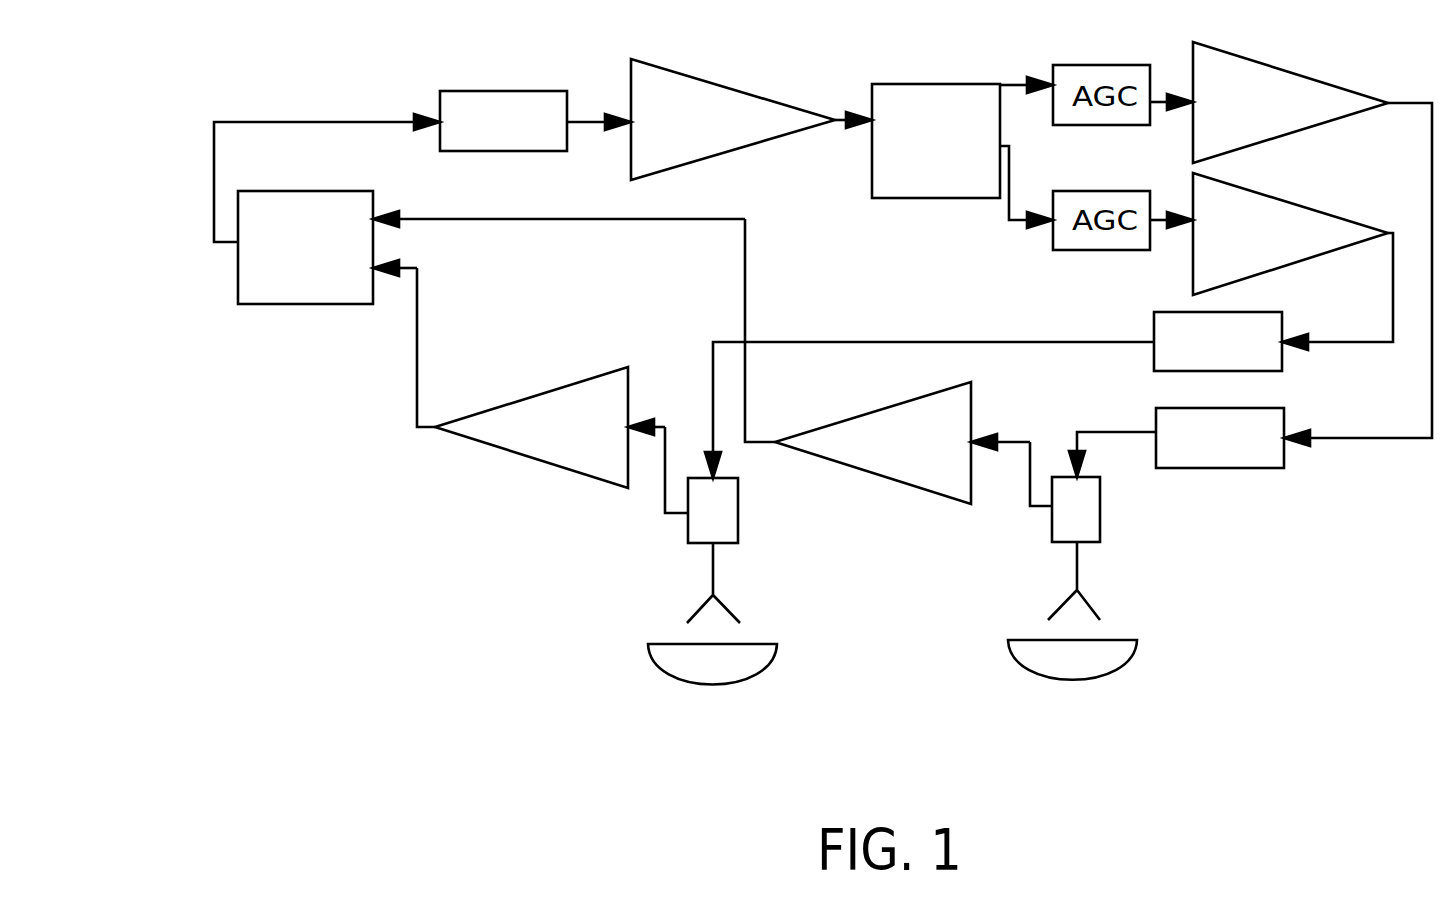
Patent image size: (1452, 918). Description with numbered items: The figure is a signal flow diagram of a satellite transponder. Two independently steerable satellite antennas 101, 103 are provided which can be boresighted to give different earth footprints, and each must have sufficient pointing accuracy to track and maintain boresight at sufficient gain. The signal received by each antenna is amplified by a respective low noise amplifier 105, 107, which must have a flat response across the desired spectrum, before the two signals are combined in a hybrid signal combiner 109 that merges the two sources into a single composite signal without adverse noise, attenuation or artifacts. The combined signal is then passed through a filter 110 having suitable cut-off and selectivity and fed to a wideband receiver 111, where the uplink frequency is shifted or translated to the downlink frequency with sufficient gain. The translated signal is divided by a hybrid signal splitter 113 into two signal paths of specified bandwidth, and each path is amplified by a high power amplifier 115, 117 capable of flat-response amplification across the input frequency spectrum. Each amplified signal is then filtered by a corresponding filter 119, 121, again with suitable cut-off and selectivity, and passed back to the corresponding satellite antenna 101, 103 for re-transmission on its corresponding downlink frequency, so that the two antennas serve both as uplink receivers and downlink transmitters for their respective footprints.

The independently steerable satellite antenna 101 is at (648, 644).
The independently steerable satellite antenna 103 is at (1008, 640).
The low noise amplifier 105 is at (580, 382).
The low noise amplifier 107 is at (888, 406).
The hybrid signal combiner 109 is at (238, 294).
The filter 110 is at (440, 101).
The wideband receiver 111 is at (631, 77).
The hybrid signal splitter 113 is at (872, 92).
The high power amplifier 115 is at (1193, 50).
The high power amplifier 117 is at (1193, 187).
The filter 119 is at (1154, 330).
The filter 121 is at (1156, 420).